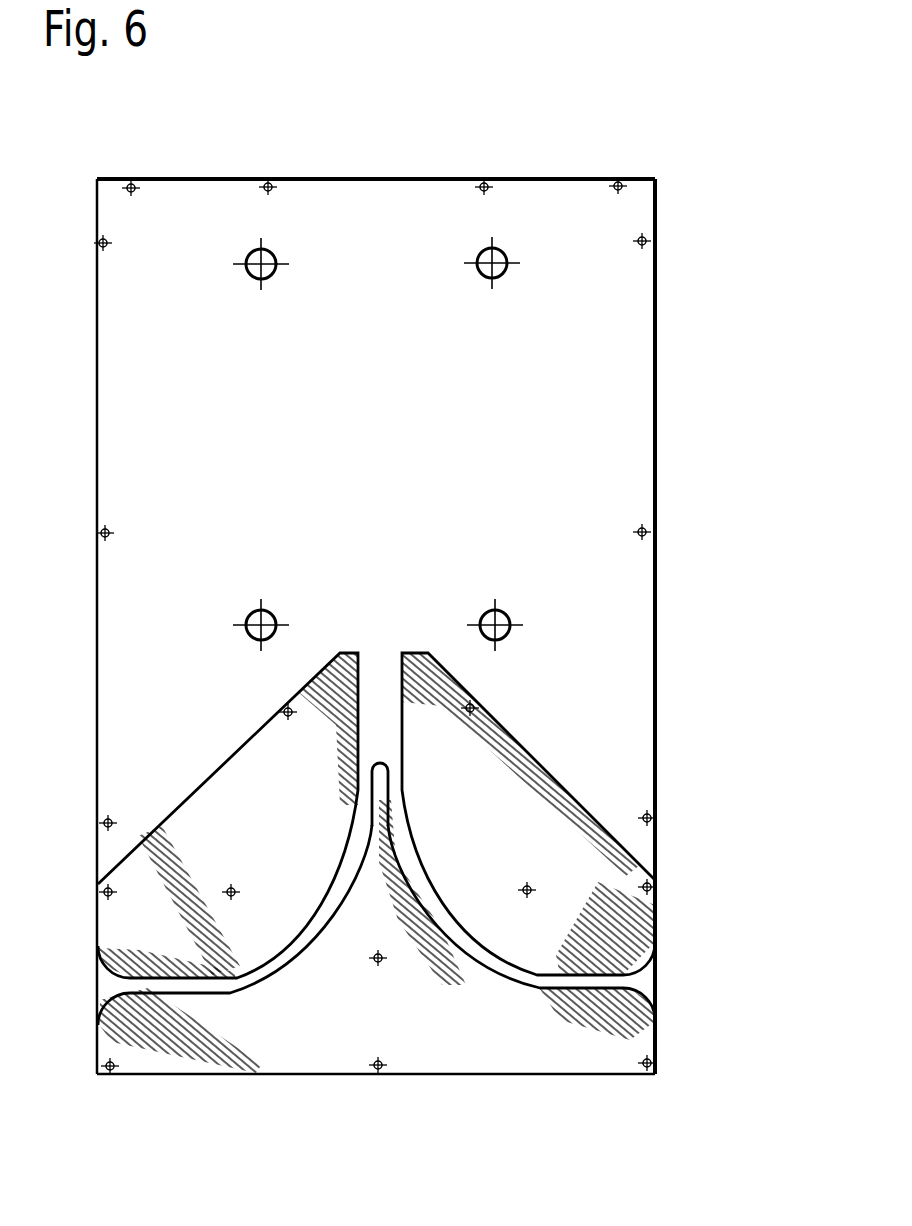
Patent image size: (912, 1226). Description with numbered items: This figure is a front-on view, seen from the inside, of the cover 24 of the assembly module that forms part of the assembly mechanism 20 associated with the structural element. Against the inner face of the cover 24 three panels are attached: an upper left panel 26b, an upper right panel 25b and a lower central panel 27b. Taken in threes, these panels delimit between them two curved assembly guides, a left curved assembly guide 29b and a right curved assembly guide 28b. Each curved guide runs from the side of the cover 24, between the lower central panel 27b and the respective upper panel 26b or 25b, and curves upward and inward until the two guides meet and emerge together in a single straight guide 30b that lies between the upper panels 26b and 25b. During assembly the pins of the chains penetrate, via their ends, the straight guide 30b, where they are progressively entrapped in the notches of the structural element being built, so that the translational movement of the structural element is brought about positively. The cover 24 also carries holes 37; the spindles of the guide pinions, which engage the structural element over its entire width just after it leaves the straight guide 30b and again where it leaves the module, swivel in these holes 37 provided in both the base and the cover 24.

The assembly mechanism 20 is at (704, 540).
The cover 24 is at (281, 432).
The holes 37 is at (485, 275).
The panel 26b is at (233, 790).
The panel 25b is at (542, 783).
The straight guide 30b is at (380, 703).
The curved assembly guide 29b is at (312, 925).
The curved assembly guide 28b is at (473, 943).
The panel 27b is at (428, 1047).